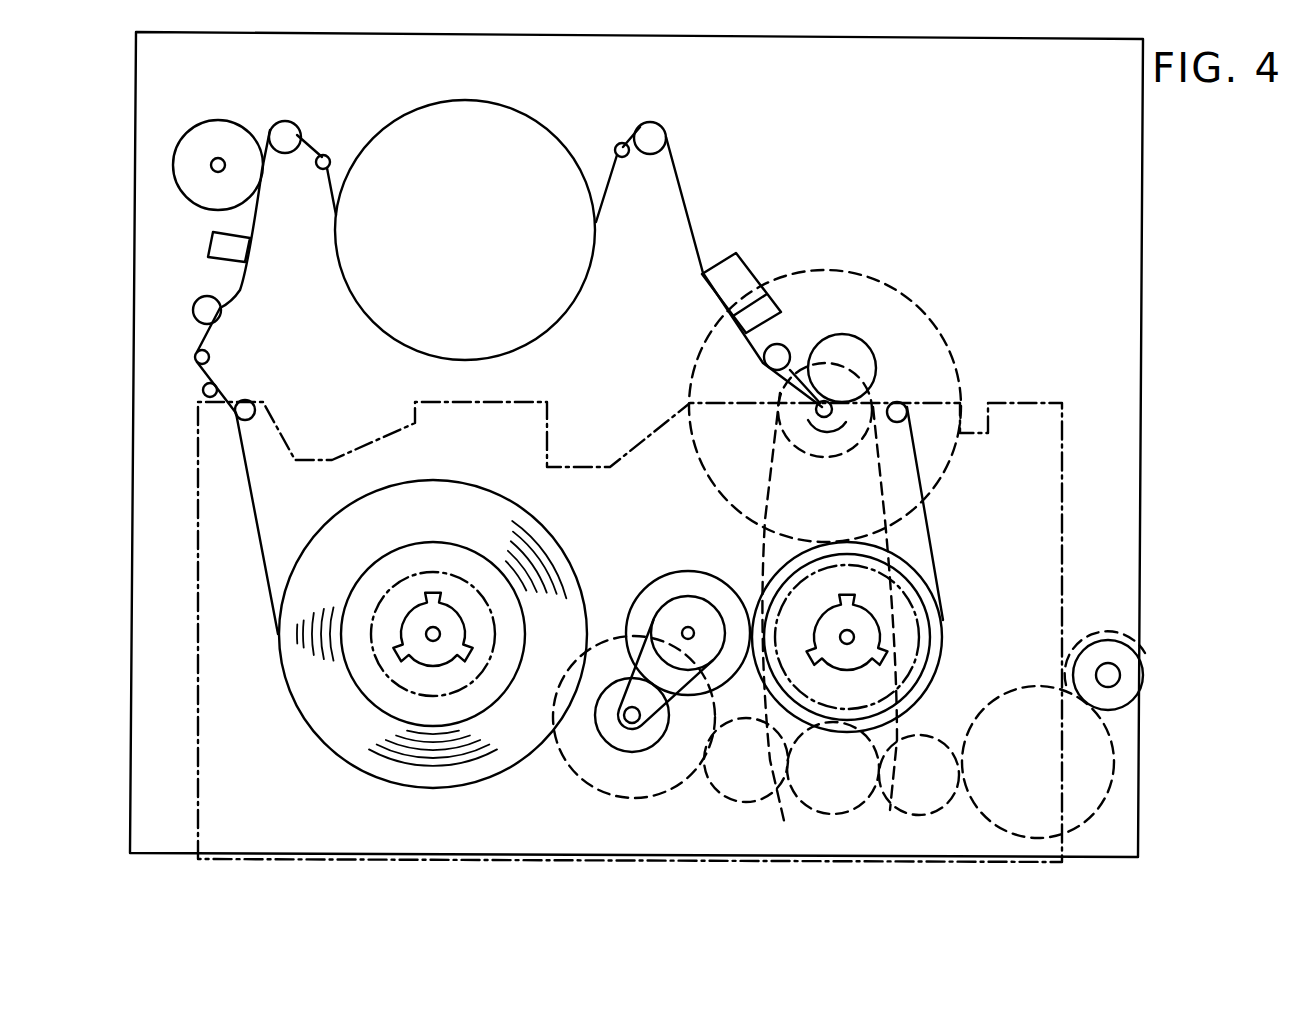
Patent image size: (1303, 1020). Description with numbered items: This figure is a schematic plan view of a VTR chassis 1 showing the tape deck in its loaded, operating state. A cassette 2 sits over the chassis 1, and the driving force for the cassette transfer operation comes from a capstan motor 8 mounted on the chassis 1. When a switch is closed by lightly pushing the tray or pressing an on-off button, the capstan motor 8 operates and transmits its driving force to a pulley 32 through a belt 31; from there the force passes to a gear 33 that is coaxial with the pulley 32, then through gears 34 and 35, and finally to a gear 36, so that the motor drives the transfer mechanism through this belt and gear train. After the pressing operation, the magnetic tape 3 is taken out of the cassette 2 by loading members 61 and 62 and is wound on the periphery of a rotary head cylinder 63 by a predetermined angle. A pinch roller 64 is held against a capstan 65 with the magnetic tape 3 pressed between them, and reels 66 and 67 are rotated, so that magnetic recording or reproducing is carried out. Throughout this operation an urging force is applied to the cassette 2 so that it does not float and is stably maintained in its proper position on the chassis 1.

The chassis 1 is at (1143, 197).
The cassette 2 is at (1063, 482).
The magnetic tape 3 is at (680, 177).
The capstan motor 8 is at (870, 287).
The belt 31 is at (888, 497).
The pulley 32 is at (873, 822).
The gear 33 is at (810, 808).
The gear 34 is at (935, 807).
The gear 35 is at (1102, 803).
The gear 36 is at (1140, 700).
The loading member 61 is at (295, 133).
The loading member 62 is at (648, 127).
The rotary head cylinder 63 is at (523, 127).
The pinch roller 64 is at (862, 360).
The capstan 65 is at (818, 404).
The reel 66 is at (407, 635).
The reel 67 is at (868, 632).